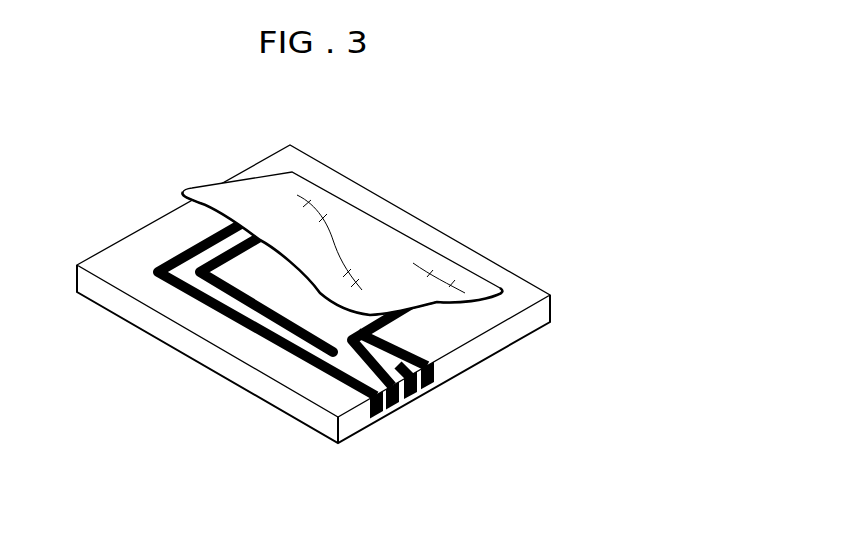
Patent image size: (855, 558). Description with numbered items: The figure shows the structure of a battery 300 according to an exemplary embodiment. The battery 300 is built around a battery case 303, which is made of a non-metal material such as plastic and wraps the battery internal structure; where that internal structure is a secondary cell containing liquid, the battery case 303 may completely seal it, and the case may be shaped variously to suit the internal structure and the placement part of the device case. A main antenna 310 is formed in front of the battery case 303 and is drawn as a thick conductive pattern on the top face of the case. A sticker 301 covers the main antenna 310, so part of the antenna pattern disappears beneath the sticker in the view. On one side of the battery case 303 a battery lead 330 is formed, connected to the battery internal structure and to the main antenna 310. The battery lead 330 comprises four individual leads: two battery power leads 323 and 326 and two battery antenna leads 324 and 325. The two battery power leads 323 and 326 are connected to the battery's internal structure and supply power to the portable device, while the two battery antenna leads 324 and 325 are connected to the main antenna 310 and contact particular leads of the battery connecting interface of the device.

The battery 300 is at (550, 124).
The sticker 301 is at (203, 189).
The battery case 303 is at (108, 260).
The main antenna 310 is at (237, 326).
The battery power lead 323 is at (373, 418).
The battery antenna lead 324 is at (392, 409).
The battery antenna lead 325 is at (408, 398).
The battery power lead 326 is at (427, 390).
The battery lead 330 is at (507, 449).